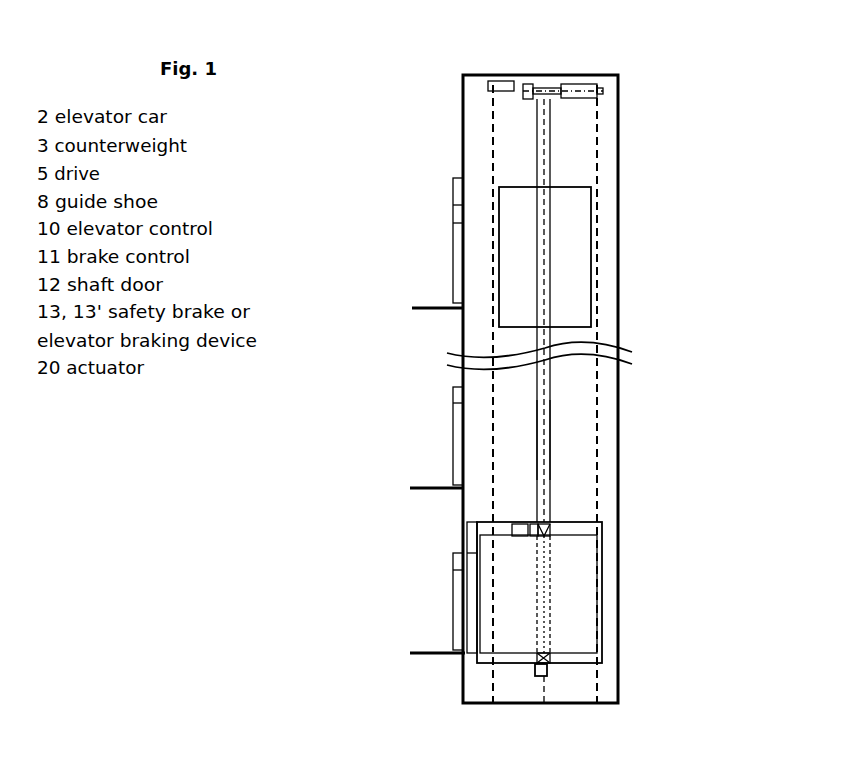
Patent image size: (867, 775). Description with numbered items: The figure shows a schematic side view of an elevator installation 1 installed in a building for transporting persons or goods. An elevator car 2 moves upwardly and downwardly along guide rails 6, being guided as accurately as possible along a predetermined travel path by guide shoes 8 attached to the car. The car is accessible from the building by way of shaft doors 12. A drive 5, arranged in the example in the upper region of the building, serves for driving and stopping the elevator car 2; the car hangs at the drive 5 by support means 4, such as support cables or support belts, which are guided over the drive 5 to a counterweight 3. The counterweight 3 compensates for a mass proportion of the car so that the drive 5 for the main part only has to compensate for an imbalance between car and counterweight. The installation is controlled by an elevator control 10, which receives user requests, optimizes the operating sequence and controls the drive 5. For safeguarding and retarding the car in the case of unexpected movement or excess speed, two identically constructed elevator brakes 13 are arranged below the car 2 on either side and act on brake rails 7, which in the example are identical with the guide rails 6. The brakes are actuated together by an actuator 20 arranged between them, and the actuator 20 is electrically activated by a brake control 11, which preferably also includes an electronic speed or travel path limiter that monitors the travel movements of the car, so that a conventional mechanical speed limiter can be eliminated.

The elevator installation 1 is at (330, 526).
The elevator car 2 is at (567, 596).
The counterweight 3 is at (563, 224).
The support means 4 is at (535, 472).
The drive 5 is at (555, 98).
The guide rails 6 is at (493, 122).
The brake rails 7 is at (540, 170).
The guide shoes 8 is at (549, 522).
The elevator control 10 is at (488, 86).
The brake control 11 is at (523, 522).
The shaft doors 12 is at (452, 268).
The elevator brake 13 is at (550, 675).
The actuator 20 is at (534, 530).